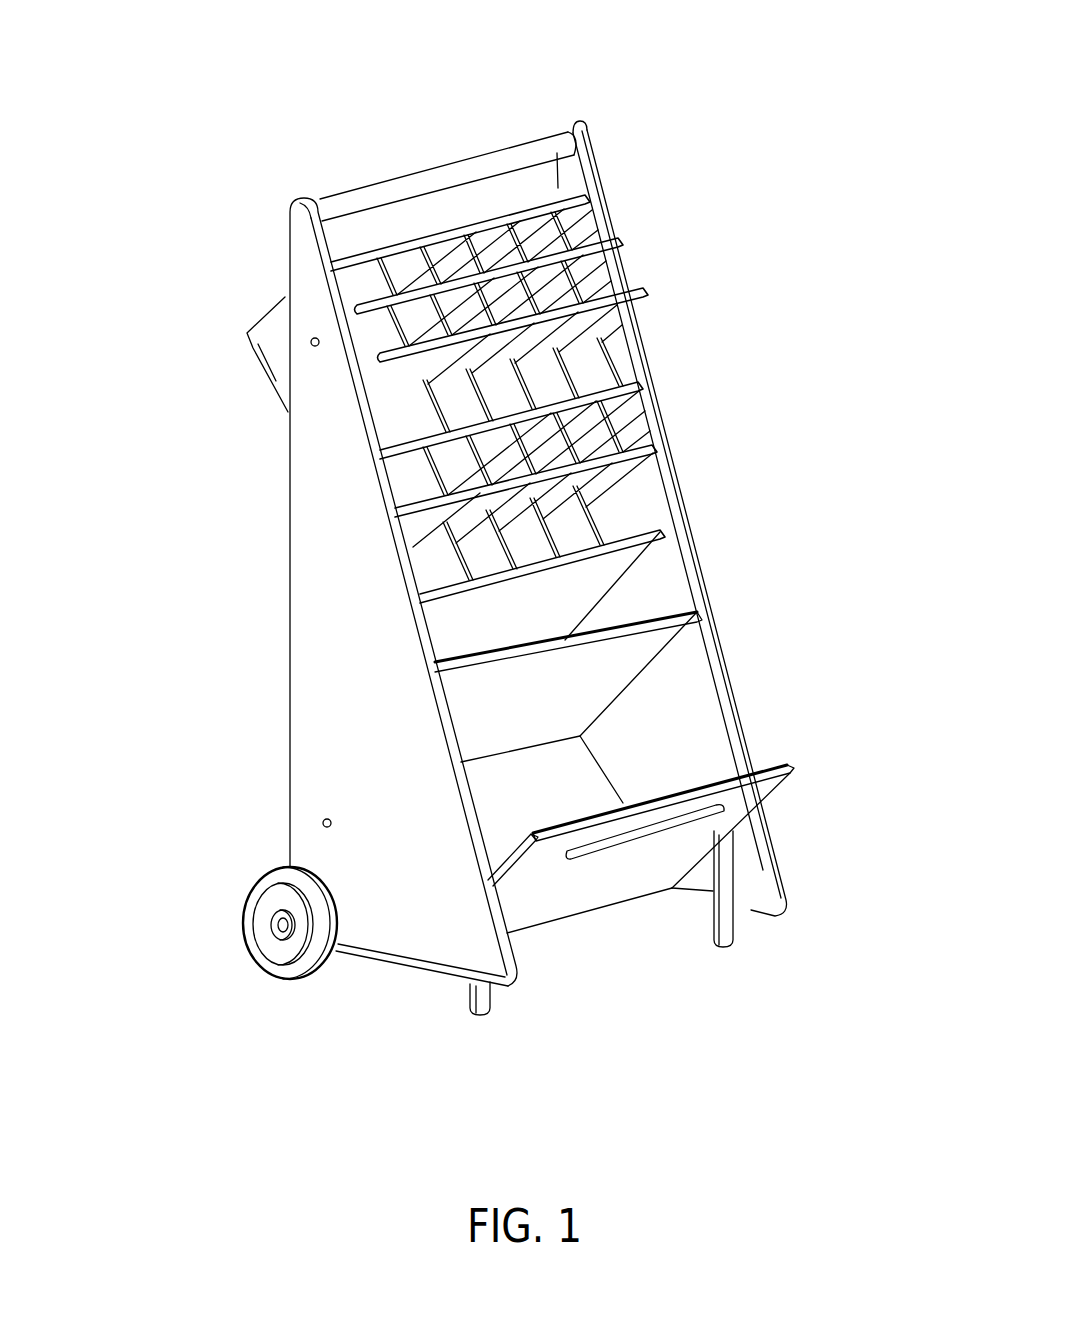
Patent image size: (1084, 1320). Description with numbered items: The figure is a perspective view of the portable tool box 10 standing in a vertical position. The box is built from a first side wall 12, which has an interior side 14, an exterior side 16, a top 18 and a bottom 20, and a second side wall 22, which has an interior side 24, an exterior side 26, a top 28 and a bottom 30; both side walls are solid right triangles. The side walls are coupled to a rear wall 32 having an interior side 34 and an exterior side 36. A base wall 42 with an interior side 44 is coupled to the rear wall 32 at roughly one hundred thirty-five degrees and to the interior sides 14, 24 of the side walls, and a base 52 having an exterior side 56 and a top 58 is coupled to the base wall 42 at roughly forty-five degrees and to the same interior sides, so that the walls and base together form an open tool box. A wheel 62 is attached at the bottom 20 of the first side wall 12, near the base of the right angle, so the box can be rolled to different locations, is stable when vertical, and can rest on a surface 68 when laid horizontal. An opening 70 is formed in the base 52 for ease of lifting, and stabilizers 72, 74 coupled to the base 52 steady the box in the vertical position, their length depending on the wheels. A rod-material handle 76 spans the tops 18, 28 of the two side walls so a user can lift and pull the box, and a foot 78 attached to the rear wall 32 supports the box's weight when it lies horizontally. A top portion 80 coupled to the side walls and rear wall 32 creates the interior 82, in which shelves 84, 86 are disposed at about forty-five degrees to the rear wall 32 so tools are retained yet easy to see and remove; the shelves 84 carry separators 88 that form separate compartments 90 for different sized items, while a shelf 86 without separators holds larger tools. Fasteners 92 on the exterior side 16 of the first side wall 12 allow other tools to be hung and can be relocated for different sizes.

The portable tool box 10 is at (746, 144).
The first side wall 12 is at (398, 715).
The interior side of first side wall 14 is at (491, 809).
The exterior side of first side wall 16 is at (331, 750).
The top of first side wall 18 is at (297, 217).
The bottom of first side wall 20 is at (377, 928).
The second side wall 22 is at (653, 745).
The interior side of second side wall 24 is at (693, 702).
The exterior side of second side wall 26 is at (738, 718).
The top of second side wall 28 is at (573, 121).
The bottom of second side wall 30 is at (690, 887).
The rear wall 32 is at (284, 577).
The interior side of rear wall 34 is at (473, 660).
The exterior side of rear wall 36 is at (281, 490).
The base wall 42 is at (585, 790).
The interior side of base wall 44 is at (528, 799).
The base 52 is at (605, 895).
The exterior side of base 56 is at (631, 866).
The top of base 58 is at (793, 760).
The wheel 62 is at (272, 950).
The surface 68 is at (645, 291).
The opening 70 is at (680, 832).
The stabilizer 72 is at (493, 1007).
The stabilizer 74 is at (733, 930).
The handle 76 is at (478, 165).
The foot 78 is at (280, 303).
The top portion 80 is at (405, 247).
The interior 82 is at (562, 530).
The shelf 84 is at (621, 238).
The shelf 86 is at (707, 603).
The separator 88 is at (553, 383).
The compartment 90 is at (420, 408).
The fastener 92 is at (311, 338).